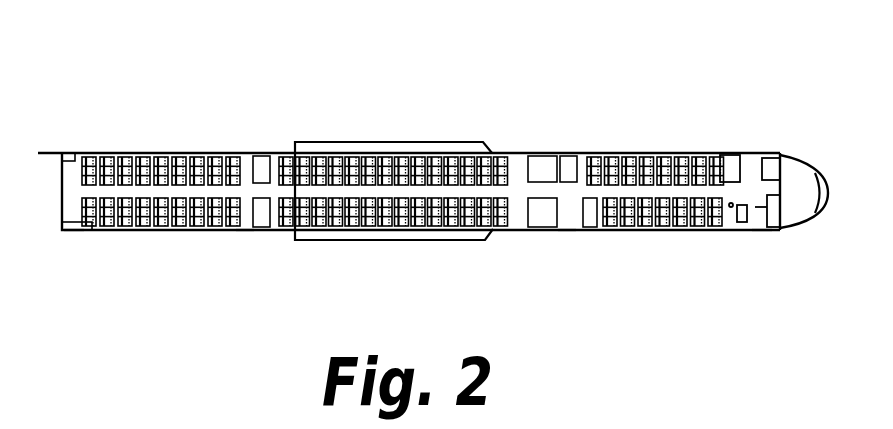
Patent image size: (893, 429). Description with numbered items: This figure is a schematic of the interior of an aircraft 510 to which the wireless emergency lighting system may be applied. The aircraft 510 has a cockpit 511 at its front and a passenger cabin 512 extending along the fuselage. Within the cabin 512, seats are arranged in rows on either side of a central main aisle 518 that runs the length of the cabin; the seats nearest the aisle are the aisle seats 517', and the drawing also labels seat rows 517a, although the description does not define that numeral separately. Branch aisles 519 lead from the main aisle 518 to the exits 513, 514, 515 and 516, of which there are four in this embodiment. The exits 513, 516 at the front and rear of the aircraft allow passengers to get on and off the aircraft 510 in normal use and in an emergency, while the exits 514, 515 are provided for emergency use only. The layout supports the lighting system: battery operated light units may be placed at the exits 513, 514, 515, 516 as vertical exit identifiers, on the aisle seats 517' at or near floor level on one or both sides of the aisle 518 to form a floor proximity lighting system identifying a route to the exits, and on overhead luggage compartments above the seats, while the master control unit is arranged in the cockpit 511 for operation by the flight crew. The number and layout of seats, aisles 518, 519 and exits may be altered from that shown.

The aircraft 510 is at (665, 105).
The cockpit 511 is at (803, 197).
The passenger cabin 512 is at (404, 128).
The exit 513 is at (762, 231).
The exit 514 is at (567, 230).
The exit 515 is at (243, 231).
The exit 516 is at (73, 231).
The seat rows of end sections 517a is at (133, 165).
The aisle seats 517' is at (389, 195).
The central main aisle 518 is at (185, 190).
The branch aisles 519 is at (755, 207).